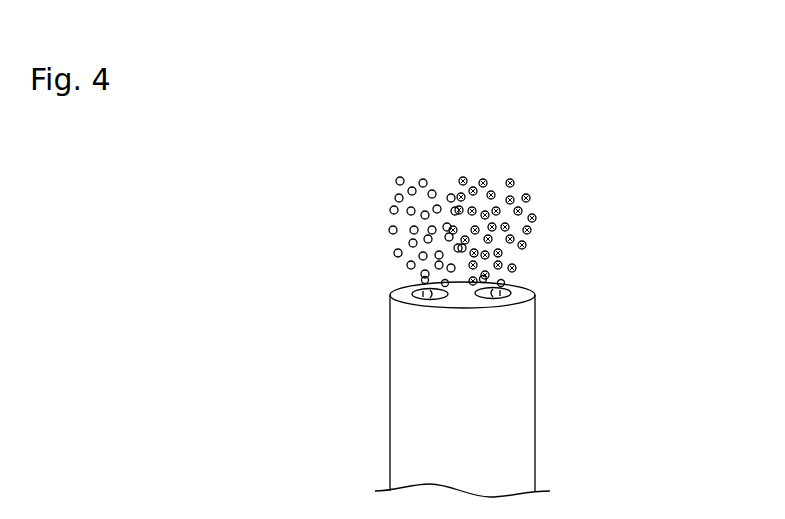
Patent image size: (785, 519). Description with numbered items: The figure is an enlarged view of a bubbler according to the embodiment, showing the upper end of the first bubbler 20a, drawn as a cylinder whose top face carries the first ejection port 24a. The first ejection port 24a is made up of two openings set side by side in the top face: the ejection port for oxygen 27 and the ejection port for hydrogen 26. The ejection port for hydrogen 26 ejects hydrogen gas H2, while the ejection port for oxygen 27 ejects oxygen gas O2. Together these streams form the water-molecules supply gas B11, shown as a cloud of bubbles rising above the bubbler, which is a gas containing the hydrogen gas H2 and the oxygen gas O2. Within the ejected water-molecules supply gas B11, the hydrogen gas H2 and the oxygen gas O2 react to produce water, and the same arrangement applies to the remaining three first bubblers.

The first bubbler 20a is at (532, 397).
The first ejection port 24a is at (390, 319).
The ejection port for oxygen 27 is at (415, 290).
The ejection port for hydrogen 26 is at (478, 290).
The water-molecules supply gas B11 is at (452, 209).
The oxygen gas O2 is at (386, 241).
The hydrogen gas H2 is at (527, 262).